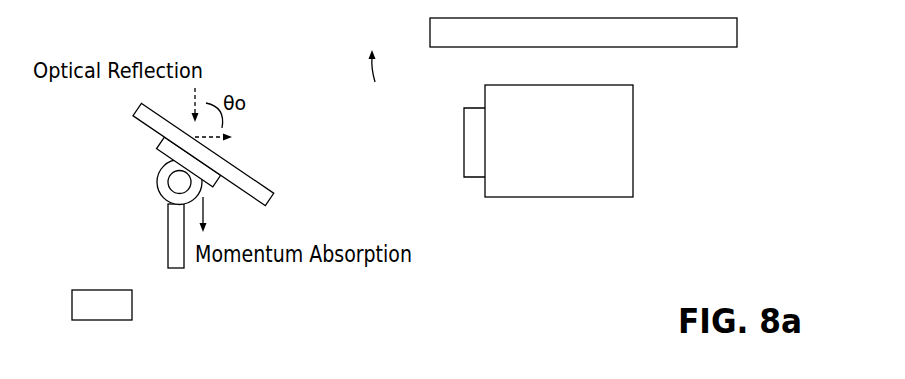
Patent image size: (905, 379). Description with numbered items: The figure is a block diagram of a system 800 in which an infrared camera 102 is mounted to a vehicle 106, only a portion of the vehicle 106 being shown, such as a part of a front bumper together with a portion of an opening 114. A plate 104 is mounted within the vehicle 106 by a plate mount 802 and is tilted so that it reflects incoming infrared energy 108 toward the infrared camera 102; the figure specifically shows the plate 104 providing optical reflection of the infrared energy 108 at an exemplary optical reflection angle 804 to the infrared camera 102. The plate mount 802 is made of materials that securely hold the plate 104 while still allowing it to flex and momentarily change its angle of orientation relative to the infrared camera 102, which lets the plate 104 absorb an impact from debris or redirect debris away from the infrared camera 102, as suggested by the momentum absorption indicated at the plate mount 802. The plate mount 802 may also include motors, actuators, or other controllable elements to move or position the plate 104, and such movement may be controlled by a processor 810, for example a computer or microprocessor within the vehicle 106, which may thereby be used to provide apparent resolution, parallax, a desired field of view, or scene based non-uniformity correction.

The infrared camera 102 is at (633, 152).
The plate 104 is at (272, 190).
The vehicle 106 is at (752, 37).
The infrared energy 108 is at (234, 141).
The opening 114 is at (382, 82).
The system 800 is at (548, 258).
The plate mount 802 is at (133, 193).
The optical reflection angle 804 is at (238, 95).
The processor 810 is at (132, 303).